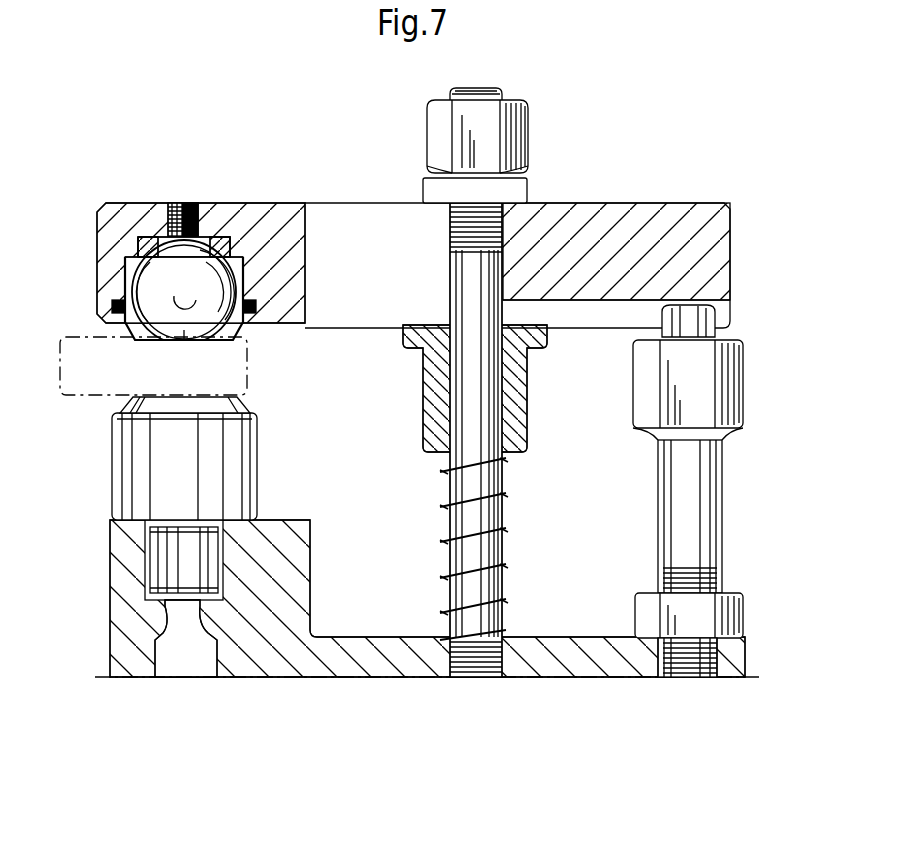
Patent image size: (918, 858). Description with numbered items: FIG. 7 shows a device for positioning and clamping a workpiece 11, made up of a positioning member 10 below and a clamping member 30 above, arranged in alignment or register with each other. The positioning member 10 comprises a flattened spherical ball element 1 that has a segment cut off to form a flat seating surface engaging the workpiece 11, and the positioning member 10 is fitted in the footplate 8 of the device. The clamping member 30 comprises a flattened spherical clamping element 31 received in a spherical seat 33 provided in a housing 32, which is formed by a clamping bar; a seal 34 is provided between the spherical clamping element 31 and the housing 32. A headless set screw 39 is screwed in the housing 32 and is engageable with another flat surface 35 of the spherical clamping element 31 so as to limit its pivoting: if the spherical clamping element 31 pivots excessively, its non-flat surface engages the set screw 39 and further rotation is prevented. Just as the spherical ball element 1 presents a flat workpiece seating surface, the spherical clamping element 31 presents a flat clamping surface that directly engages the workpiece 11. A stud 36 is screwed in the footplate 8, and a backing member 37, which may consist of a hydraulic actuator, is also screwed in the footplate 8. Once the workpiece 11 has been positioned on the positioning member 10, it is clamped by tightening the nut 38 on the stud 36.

The spherical ball element 1 is at (222, 402).
The footplate 8 is at (622, 668).
The positioning member 10 is at (109, 490).
The workpiece 11 is at (82, 380).
The clamping member 30 is at (274, 200).
The spherical clamping element 31 is at (186, 326).
The housing 32 is at (104, 208).
The spherical seat 33 is at (146, 240).
The seal 34 is at (112, 305).
The flat surface 35 is at (213, 238).
The stud 36 is at (488, 509).
The backing member 37 is at (672, 503).
The nut 38 is at (517, 103).
The headless set screw 39 is at (185, 203).